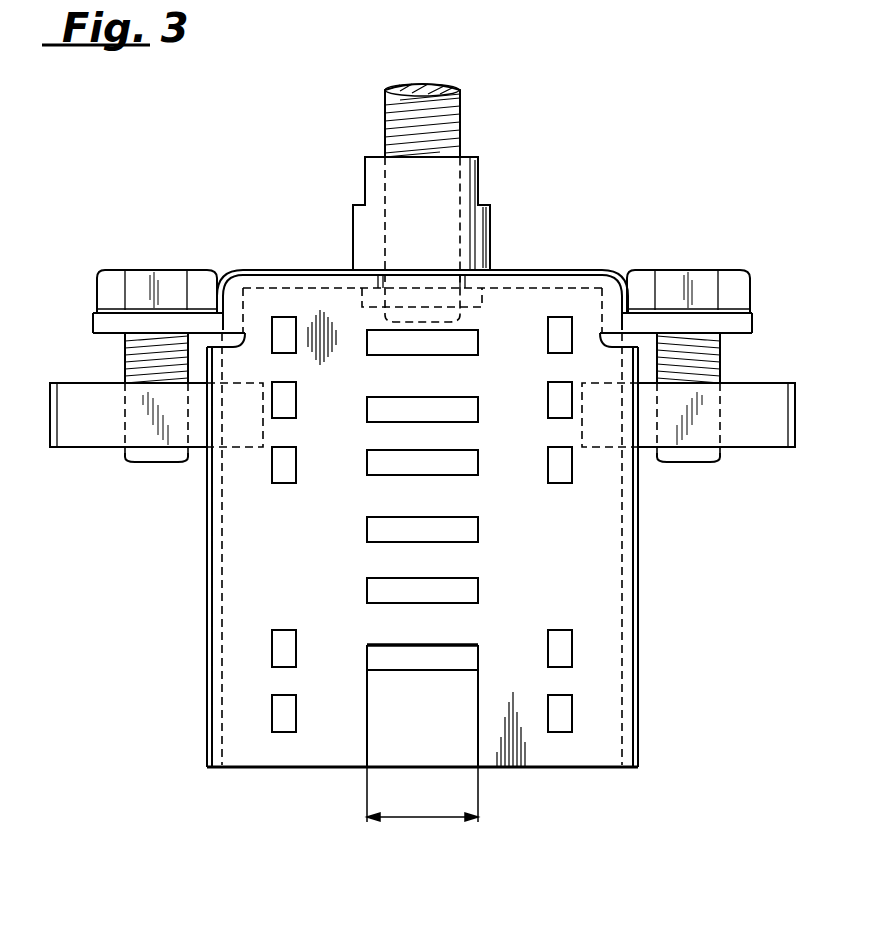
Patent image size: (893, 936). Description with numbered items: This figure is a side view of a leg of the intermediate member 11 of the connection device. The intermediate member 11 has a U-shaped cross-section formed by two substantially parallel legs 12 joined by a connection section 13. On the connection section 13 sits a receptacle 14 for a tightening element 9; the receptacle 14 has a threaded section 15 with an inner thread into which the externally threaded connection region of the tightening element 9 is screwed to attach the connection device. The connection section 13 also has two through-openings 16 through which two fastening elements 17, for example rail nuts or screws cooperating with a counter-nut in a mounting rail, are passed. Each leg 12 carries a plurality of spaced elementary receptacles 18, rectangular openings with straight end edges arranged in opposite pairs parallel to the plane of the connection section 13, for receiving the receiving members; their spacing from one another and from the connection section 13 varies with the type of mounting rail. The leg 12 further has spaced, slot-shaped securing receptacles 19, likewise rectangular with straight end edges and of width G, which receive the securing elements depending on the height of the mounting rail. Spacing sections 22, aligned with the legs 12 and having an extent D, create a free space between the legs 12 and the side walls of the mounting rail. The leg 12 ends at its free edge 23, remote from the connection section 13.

The tightening element 9 is at (393, 108).
The intermediate member 11 is at (720, 160).
The leg 12 is at (595, 546).
The connection section 13 is at (556, 286).
The receptacle 14 is at (350, 236).
The threaded section 15 is at (460, 218).
The through-opening 16 is at (137, 337).
The fastening element 17 is at (172, 283).
The elementary receptacle 18 is at (283, 463).
The securing receptacle 19 is at (373, 460).
The spacing section 22 is at (215, 580).
The free edge 23 is at (609, 774).